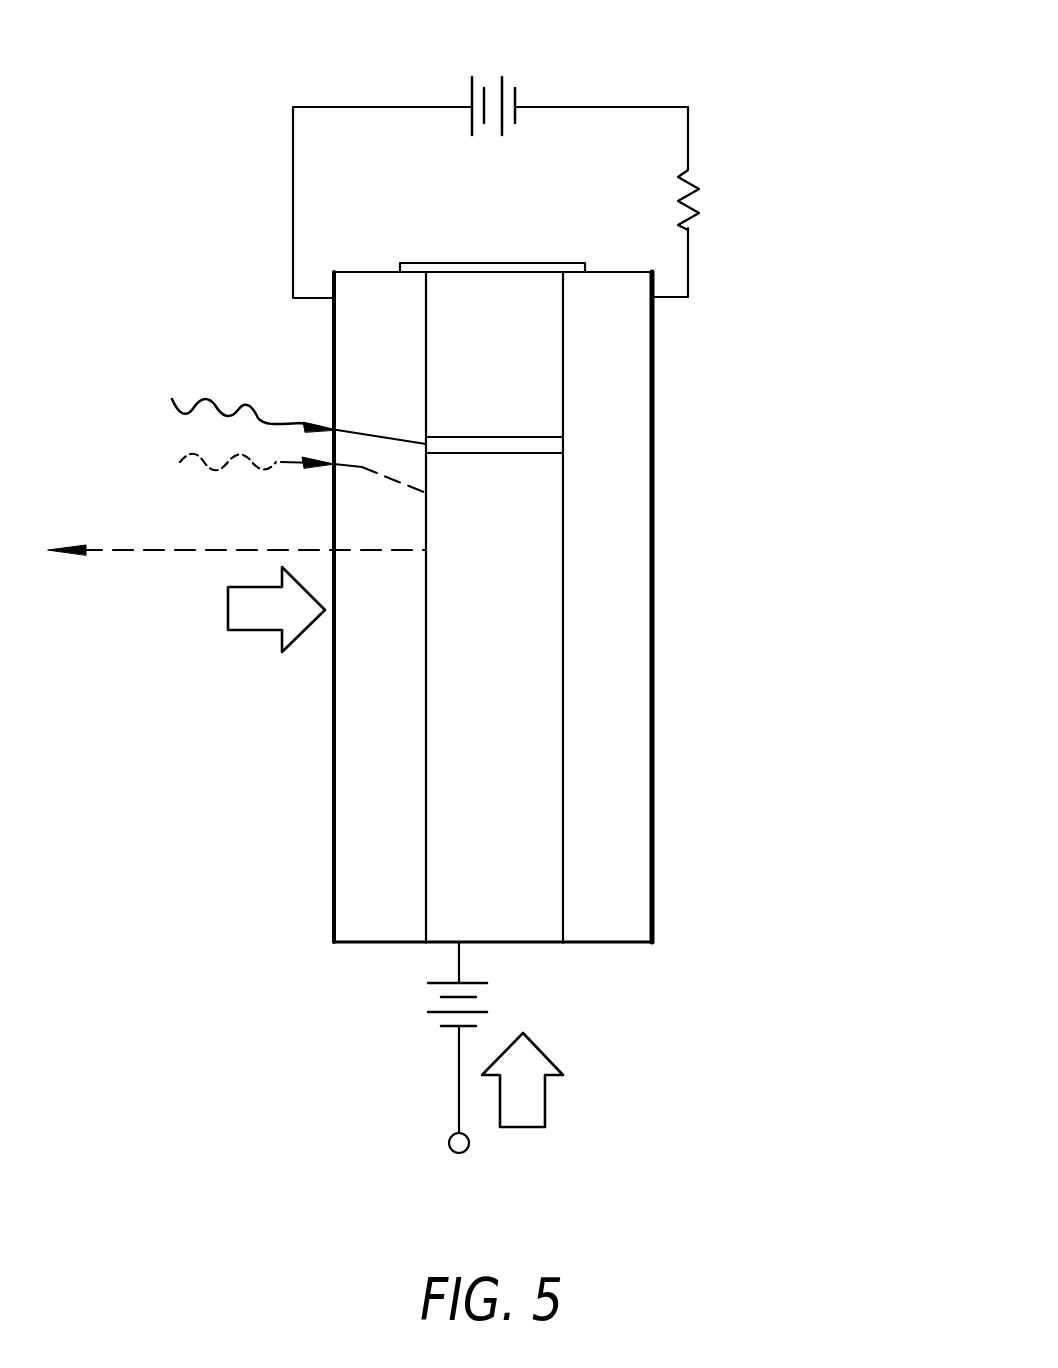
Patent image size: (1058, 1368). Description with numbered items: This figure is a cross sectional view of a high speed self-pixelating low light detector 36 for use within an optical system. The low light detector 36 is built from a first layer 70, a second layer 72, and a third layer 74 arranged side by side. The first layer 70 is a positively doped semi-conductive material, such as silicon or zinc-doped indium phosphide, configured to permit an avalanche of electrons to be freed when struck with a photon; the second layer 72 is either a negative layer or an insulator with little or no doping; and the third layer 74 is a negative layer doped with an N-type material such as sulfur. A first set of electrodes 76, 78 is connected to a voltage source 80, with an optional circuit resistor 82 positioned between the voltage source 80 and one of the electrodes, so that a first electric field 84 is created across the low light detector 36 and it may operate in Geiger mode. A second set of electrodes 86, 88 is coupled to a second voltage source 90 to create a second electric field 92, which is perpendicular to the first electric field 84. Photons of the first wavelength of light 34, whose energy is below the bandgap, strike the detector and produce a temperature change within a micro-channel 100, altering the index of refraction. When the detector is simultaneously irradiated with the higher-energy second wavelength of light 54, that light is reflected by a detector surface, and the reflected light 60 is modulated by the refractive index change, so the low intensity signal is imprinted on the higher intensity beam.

The first wavelength of light 34 is at (172, 400).
The low light detector 36 is at (842, 362).
The second wavelength of light 54 is at (176, 458).
The reflected light 60 is at (122, 550).
The first layer 70 is at (392, 917).
The second layer 72 is at (513, 917).
The third layer 74 is at (622, 917).
The first electrode 76 is at (334, 276).
The second electrode 78 is at (655, 312).
The voltage source 80 is at (517, 99).
The circuit resistor 82 is at (683, 174).
The first electric field 84 is at (255, 632).
The second set electrode 86 is at (515, 943).
The second set electrode 88 is at (515, 262).
The second voltage source 90 is at (455, 1079).
The second electric field 92 is at (545, 1127).
The micro-channel 100 is at (512, 455).